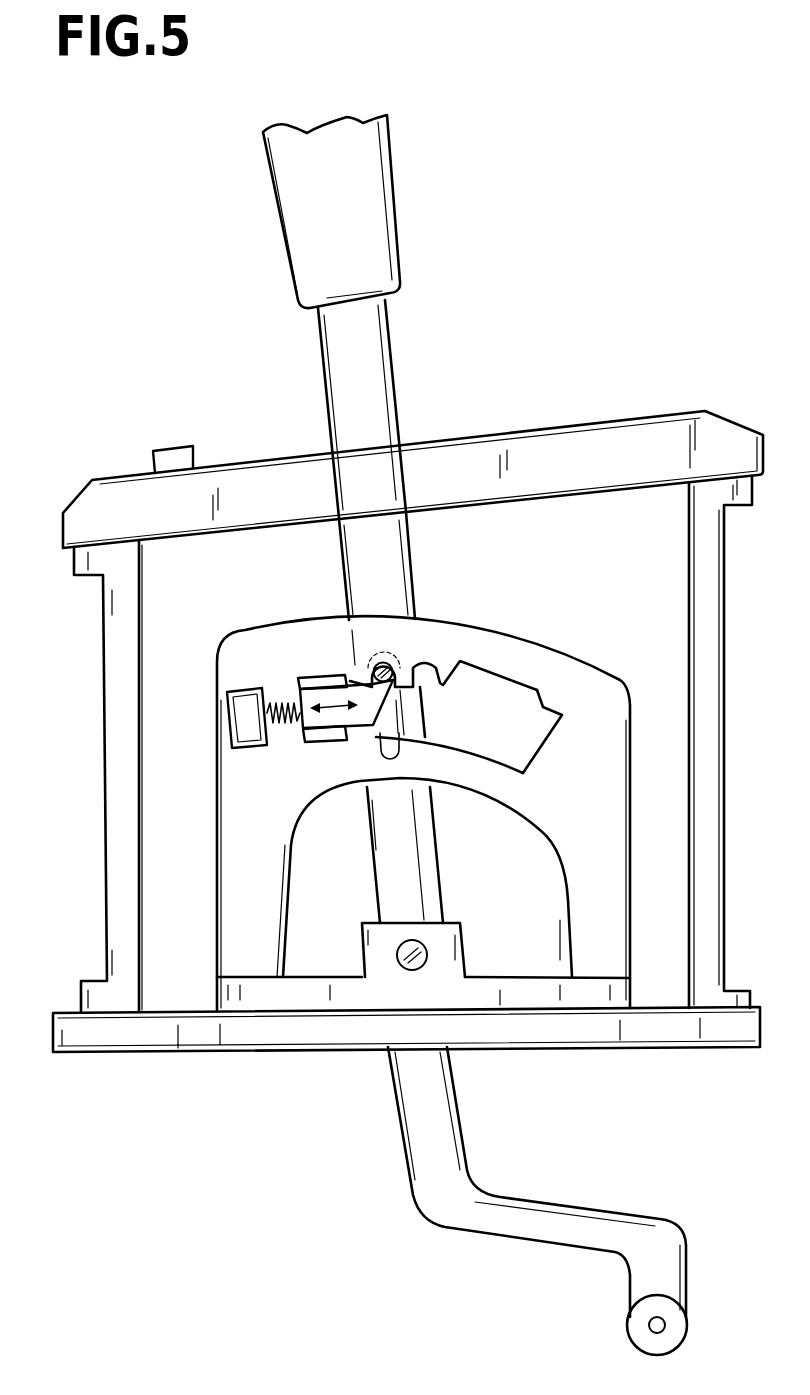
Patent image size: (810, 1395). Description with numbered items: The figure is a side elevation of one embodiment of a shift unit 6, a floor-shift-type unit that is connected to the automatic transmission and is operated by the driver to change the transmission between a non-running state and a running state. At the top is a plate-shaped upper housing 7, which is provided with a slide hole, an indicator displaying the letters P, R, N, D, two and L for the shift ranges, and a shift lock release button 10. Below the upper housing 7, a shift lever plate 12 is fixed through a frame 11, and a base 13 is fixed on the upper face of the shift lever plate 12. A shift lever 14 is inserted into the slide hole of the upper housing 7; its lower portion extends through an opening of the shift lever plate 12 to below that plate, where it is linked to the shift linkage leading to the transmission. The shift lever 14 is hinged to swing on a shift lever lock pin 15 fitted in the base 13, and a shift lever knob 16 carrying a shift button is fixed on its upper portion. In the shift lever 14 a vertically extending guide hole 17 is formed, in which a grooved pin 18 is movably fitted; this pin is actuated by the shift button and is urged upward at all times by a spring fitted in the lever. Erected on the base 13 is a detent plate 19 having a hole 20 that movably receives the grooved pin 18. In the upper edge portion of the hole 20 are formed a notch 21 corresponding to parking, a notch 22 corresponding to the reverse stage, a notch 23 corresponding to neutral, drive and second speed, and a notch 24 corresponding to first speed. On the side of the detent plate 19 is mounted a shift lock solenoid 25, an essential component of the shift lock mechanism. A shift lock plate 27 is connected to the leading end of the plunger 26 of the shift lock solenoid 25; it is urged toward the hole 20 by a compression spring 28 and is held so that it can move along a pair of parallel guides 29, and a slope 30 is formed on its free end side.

The shift unit 6 is at (598, 229).
The upper housing 7 is at (553, 440).
The shift lock release button 10 is at (172, 452).
The frame 11 is at (117, 745).
The shift lever plate 12 is at (222, 1043).
The base 13 is at (516, 978).
The shift lever 14 is at (475, 735).
The shift lever lock pin 15 is at (398, 953).
The shift lever knob 16 is at (386, 173).
The guide hole 17 is at (426, 718).
The grooved pin 18 is at (374, 666).
The detent plate 19 is at (412, 777).
The hole 20 is at (508, 751).
The notch 21 is at (483, 618).
The notch 22 is at (450, 632).
The notch 23 is at (525, 676).
The notch 24 is at (563, 712).
The shift lock solenoid 25 is at (226, 715).
The plunger 26 is at (297, 682).
The shift lock plate 27 is at (286, 711).
The compression spring 28 is at (283, 724).
The guides 29 is at (263, 711).
The slope 30 is at (388, 746).